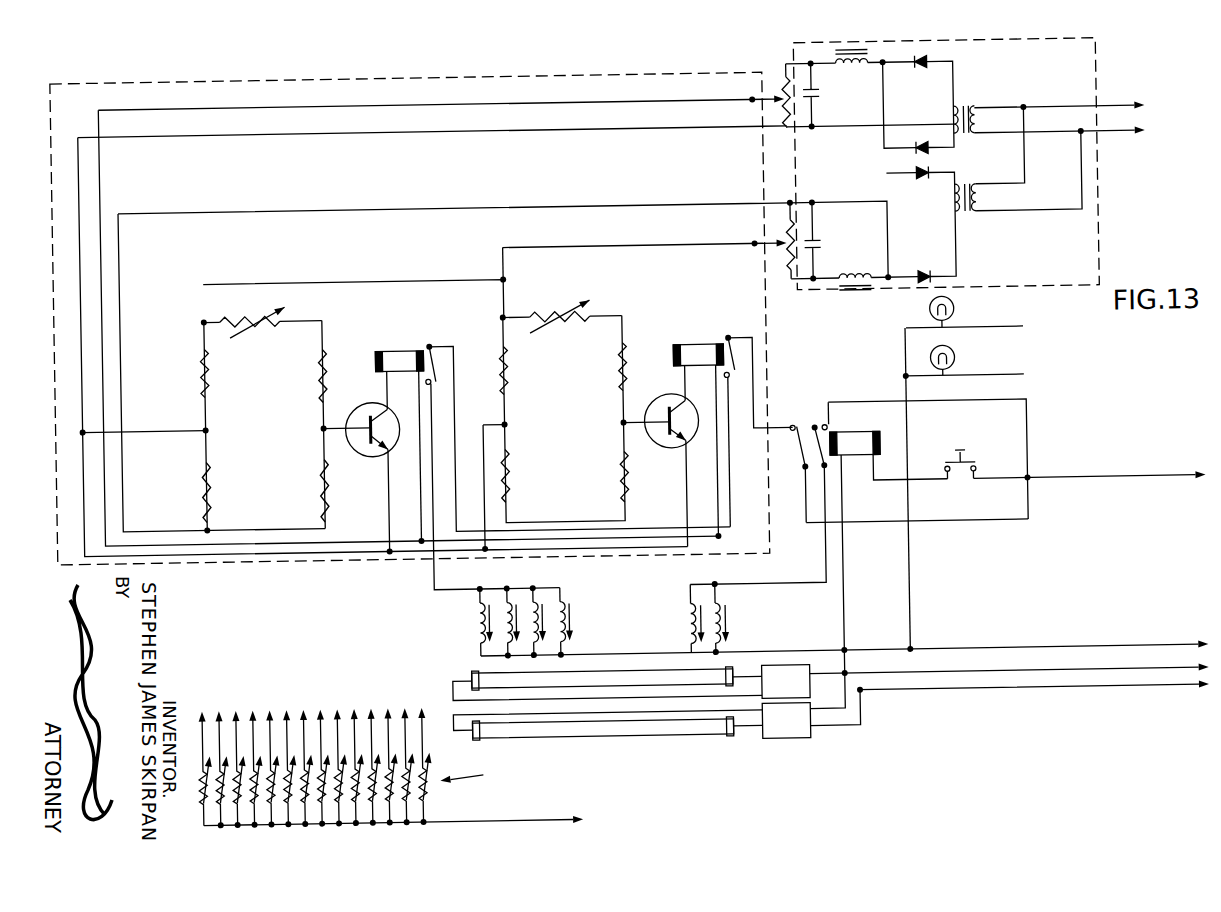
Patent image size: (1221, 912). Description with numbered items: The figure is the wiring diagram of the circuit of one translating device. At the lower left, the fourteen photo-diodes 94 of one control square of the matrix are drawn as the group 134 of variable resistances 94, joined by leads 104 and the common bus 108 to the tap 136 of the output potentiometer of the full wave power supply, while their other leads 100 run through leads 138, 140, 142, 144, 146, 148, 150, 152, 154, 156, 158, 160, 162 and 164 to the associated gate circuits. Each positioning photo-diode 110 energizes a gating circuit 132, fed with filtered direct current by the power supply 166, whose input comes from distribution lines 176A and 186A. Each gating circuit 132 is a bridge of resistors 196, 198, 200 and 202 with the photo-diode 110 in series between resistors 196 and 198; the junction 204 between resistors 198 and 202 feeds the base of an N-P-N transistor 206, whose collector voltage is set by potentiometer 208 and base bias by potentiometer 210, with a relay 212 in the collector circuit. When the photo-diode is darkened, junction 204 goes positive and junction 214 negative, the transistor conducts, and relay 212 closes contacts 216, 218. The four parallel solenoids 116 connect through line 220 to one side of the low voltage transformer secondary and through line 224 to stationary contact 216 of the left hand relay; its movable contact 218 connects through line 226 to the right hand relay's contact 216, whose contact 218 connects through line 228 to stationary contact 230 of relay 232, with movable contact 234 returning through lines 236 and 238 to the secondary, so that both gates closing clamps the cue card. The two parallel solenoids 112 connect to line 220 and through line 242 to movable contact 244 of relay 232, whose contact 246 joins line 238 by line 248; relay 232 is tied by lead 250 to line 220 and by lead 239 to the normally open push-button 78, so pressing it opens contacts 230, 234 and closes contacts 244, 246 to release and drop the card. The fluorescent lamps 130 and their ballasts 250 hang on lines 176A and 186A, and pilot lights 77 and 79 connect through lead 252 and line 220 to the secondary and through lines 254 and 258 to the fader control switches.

The pilot light 77 is at (957, 316).
The push-button 78 is at (968, 468).
The pilot light 79 is at (956, 357).
The photo-diode 94 is at (423, 782).
The lead 100 is at (198, 733).
The lead 104 is at (419, 815).
The common bus 108 is at (497, 818).
The positioning photo-diode 110 is at (250, 306).
The solenoid 112 is at (683, 617).
The solenoid 116 is at (475, 618).
The fluorescent lamp 130 is at (610, 647).
The gating circuit 132 is at (360, 351).
The group of variable resistances 134 is at (480, 776).
The tap 136 is at (607, 816).
The lead 138 is at (209, 758).
The lead 140 is at (229, 705).
The lead 142 is at (246, 758).
The lead 144 is at (263, 705).
The lead 146 is at (280, 757).
The lead 148 is at (297, 705).
The lead 150 is at (314, 758).
The lead 152 is at (331, 705).
The lead 154 is at (347, 757).
The lead 156 is at (365, 705).
The lead 158 is at (381, 756).
The lead 160 is at (398, 705).
The lead 162 is at (417, 690).
The lead 164 is at (432, 700).
The power supply 166 is at (1104, 96).
The distributor line 176A is at (1124, 109).
The distribution line 186A is at (1124, 134).
The resistor 196 is at (210, 368).
The resistor 198 is at (321, 378).
The resistor 200 is at (212, 490).
The resistor 202 is at (322, 494).
The junction 204 is at (322, 428).
The transistor 206 is at (372, 403).
The potentiometer 208 is at (788, 110).
The potentiometer 210 is at (790, 260).
The relay 212 is at (430, 344).
The junction 214 is at (209, 424).
The stationary contact 216 is at (437, 382).
The movable contact 218 is at (456, 356).
The line 220 is at (659, 644).
The line 224 is at (428, 572).
The line 226 is at (458, 426).
The line 228 is at (756, 413).
The stationary contact 230 is at (790, 435).
The relay 232 is at (854, 432).
The movable contact 234 is at (818, 471).
The line 236 is at (897, 527).
The line 238 is at (1074, 484).
The lead 239 is at (888, 483).
The line 242 is at (811, 589).
The movable contact 244 is at (809, 504).
The stationary contact 246 is at (826, 426).
The line 248 is at (971, 408).
The ballast 250 is at (842, 586).
The lead 252 is at (908, 555).
The line 254 is at (1000, 333).
The line 258 is at (993, 381).